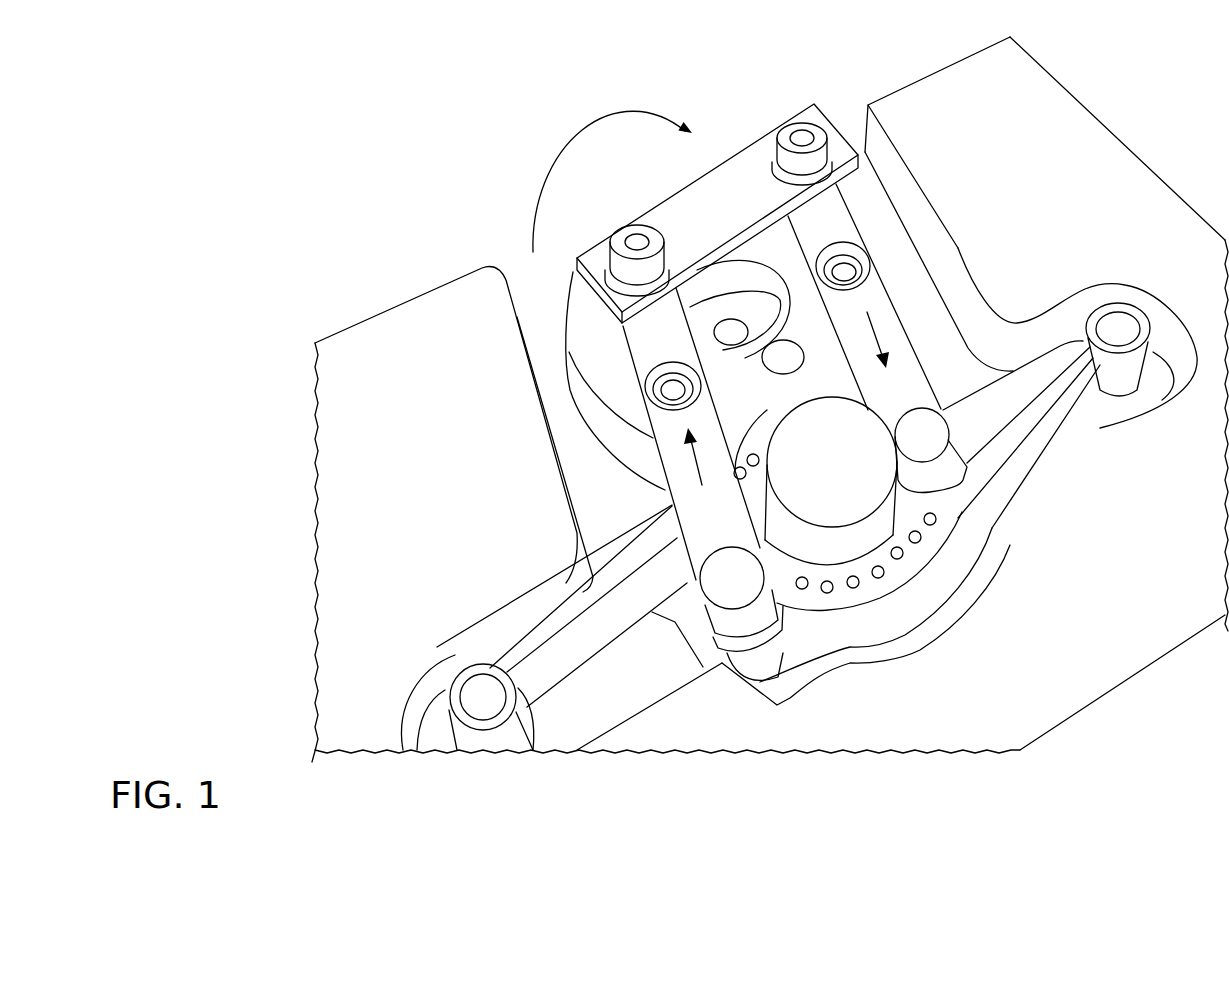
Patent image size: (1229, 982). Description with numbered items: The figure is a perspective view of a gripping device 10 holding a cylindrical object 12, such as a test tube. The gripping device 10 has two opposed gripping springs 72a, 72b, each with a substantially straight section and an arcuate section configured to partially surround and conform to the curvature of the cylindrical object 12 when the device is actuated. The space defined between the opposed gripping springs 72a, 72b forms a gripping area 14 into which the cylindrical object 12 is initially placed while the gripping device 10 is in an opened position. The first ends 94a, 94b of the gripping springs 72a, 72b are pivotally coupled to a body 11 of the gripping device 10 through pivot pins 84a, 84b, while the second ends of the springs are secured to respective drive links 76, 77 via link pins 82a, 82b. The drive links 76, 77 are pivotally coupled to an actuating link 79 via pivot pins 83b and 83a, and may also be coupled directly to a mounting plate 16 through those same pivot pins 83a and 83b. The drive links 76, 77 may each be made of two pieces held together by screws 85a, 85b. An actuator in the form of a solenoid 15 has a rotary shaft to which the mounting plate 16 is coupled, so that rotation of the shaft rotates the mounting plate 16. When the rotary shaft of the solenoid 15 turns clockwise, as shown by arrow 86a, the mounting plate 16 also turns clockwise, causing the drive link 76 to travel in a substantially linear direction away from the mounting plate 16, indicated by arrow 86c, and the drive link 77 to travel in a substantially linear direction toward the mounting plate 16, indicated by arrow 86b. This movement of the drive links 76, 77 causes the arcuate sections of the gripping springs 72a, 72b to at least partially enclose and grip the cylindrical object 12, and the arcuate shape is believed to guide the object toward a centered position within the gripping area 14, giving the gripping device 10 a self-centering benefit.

The gripping device 10 is at (1128, 59).
The body 11 is at (1075, 440).
The cylindrical object 12 is at (845, 467).
The gripping area 14 is at (904, 521).
The solenoid 15 is at (700, 325).
The mounting plate 16 is at (582, 318).
The gripping spring 72a is at (572, 603).
The gripping spring 72b is at (953, 517).
The drive link 76 is at (900, 348).
The drive link 77 is at (673, 496).
The actuating link 79 is at (655, 213).
The link pin 82a is at (708, 593).
The link pin 82b is at (928, 425).
The pivot pin 83a is at (622, 243).
The pivot pin 83b is at (808, 126).
The pivot pin 84a is at (470, 688).
The pivot pin 84b is at (1125, 312).
The screw 85a is at (703, 383).
The screw 85b is at (850, 240).
The arrow 86a is at (580, 137).
The arrow 86b is at (670, 495).
The arrow 86c is at (873, 335).
The first end 94a is at (527, 725).
The first end 94b is at (1125, 383).